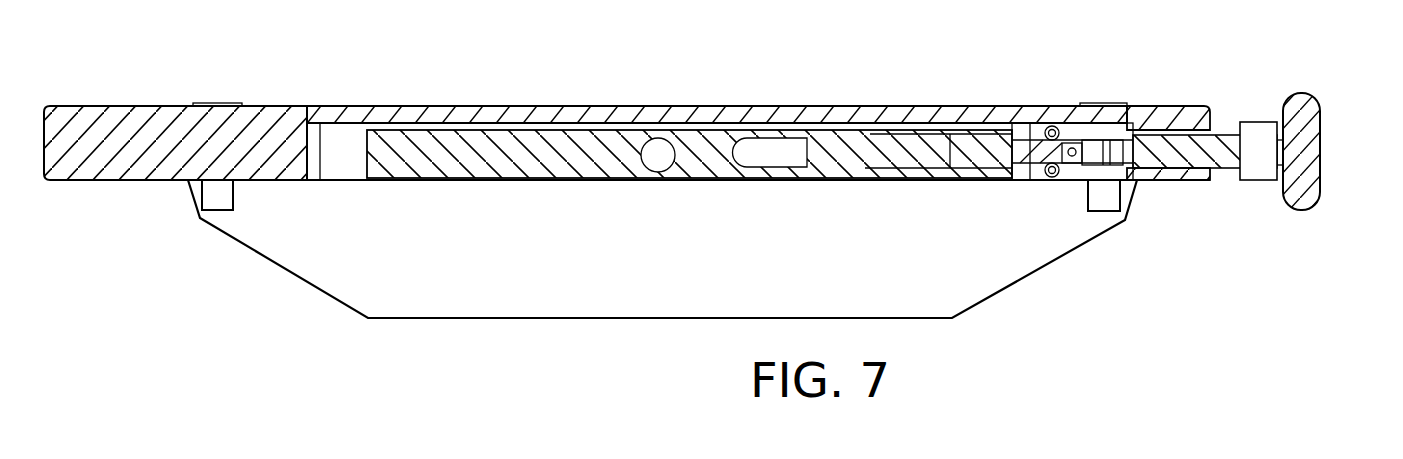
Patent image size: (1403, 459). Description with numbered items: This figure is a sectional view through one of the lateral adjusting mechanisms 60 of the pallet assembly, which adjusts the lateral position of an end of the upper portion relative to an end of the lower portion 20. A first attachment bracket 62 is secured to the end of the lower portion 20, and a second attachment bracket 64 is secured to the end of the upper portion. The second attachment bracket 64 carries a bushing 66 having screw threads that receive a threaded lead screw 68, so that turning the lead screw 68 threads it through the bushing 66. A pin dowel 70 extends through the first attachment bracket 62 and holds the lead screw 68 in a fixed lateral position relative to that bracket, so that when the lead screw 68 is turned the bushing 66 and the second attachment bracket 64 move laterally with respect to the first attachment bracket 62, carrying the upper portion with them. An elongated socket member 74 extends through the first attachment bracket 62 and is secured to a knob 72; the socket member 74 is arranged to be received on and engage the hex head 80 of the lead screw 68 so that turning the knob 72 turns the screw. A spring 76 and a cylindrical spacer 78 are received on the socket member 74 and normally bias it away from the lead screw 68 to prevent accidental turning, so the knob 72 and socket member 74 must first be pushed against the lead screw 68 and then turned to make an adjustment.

The lower portion 20 is at (1025, 285).
The adjusting mechanism 60 is at (579, 88).
The first attachment bracket 62 is at (810, 107).
The second attachment bracket 64 is at (697, 107).
The bushing 66 is at (882, 125).
The lead screw 68 is at (978, 125).
The pin dowel 70 is at (1053, 126).
The knob 72 is at (1318, 130).
The elongated socket member 74 is at (1140, 180).
The spring 76 is at (1173, 107).
The cylindrical spacer 78 is at (1225, 125).
The hex head 80 is at (1090, 180).